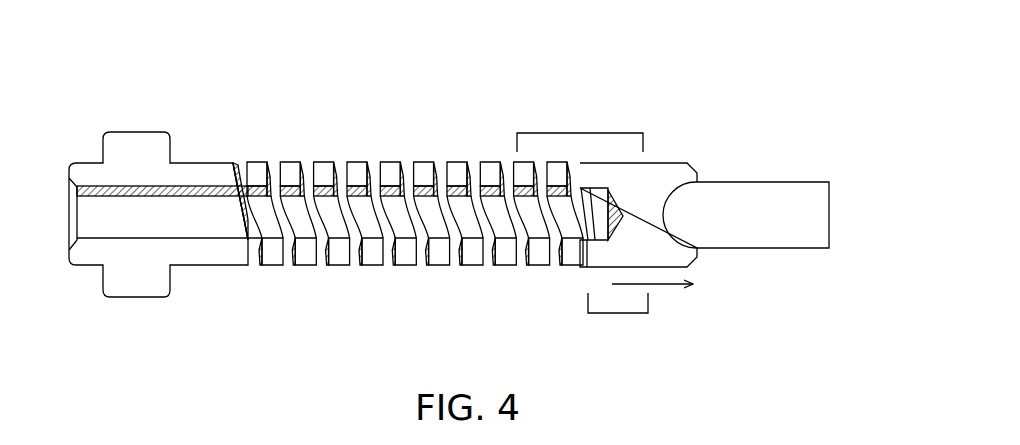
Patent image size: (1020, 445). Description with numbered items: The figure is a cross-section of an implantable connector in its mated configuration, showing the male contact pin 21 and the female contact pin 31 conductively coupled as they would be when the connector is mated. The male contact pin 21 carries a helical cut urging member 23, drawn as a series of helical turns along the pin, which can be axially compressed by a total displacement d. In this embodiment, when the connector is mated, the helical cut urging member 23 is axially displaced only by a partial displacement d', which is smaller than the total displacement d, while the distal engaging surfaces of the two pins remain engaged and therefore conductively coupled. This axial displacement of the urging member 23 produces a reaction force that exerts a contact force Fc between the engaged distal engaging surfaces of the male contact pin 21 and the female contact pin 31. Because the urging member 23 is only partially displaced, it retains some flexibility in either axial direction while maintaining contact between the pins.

The male contact pin 21 is at (207, 160).
The helical cut urging member 23 is at (420, 133).
The female contact pin 31 is at (800, 182).
The contact force Fc is at (673, 190).
The total displacement d is at (580, 117).
The partial displacement d' is at (640, 321).